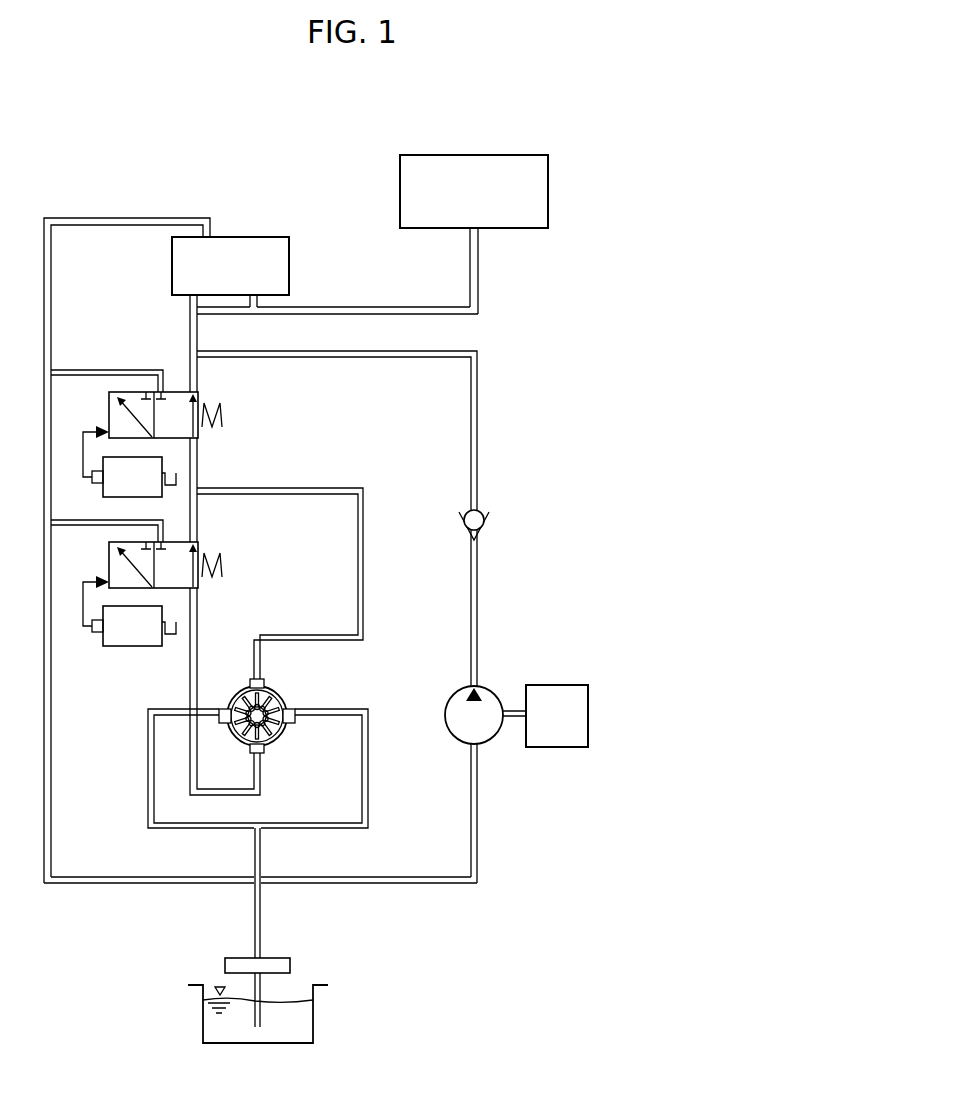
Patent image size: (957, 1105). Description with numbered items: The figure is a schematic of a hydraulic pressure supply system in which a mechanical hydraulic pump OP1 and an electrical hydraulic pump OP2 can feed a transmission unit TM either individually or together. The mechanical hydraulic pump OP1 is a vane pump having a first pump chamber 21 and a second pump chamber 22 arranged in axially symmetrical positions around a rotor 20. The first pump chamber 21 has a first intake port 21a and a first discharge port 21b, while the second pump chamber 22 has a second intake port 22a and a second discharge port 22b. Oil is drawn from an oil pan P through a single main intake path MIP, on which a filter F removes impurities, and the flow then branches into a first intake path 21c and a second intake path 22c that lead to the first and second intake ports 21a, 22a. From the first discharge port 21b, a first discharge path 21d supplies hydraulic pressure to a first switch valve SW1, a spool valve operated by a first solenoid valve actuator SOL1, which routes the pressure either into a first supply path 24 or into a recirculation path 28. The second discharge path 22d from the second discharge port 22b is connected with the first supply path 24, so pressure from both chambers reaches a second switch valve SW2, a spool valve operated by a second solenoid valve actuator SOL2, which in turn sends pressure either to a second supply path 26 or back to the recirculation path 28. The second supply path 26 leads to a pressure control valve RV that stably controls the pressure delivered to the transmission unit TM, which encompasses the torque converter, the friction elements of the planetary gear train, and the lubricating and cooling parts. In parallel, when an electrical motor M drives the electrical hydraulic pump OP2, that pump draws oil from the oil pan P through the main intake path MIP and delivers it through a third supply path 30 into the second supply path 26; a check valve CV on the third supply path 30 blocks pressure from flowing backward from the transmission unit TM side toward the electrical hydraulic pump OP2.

The rotor 20 is at (282, 728).
The first pump chamber 21 is at (230, 742).
The first intake port 21a is at (228, 706).
The first discharge port 21b is at (266, 758).
The first intake path 21c is at (148, 764).
The first discharge path 21d is at (197, 610).
The second pump chamber 22 is at (288, 692).
The second intake port 22a is at (298, 706).
The second discharge port 22b is at (263, 676).
The second intake path 22c is at (368, 800).
The second discharge path 22d is at (363, 576).
The first supply path 24 is at (198, 463).
The second supply path 26 is at (190, 333).
The recirculation path 28 is at (51, 332).
The third supply path 30 is at (478, 428).
The transmission unit TM is at (475, 155).
The pressure control valve RV is at (266, 237).
The first switch valve SW1 is at (180, 583).
The second switch valve SW2 is at (180, 433).
The first solenoid valve actuator SOL1 is at (132, 626).
The second solenoid valve actuator SOL2 is at (132, 477).
The check valve CV is at (498, 520).
The mechanical hydraulic pump OP1 is at (310, 723).
The electrical hydraulic pump OP2 is at (459, 686).
The electrical motor M is at (589, 716).
The main intake path MIP is at (261, 920).
The filter F is at (291, 965).
The oil pan P is at (314, 1015).